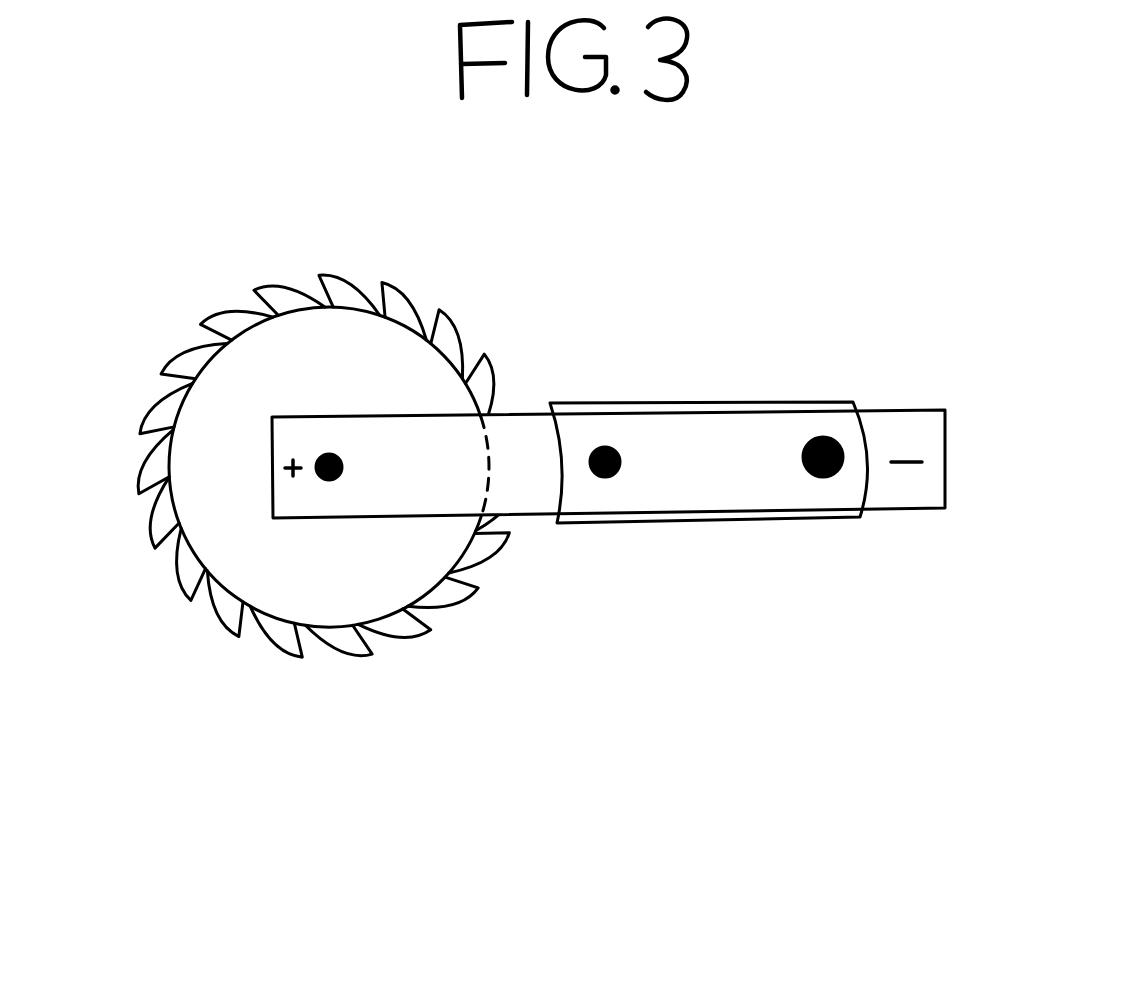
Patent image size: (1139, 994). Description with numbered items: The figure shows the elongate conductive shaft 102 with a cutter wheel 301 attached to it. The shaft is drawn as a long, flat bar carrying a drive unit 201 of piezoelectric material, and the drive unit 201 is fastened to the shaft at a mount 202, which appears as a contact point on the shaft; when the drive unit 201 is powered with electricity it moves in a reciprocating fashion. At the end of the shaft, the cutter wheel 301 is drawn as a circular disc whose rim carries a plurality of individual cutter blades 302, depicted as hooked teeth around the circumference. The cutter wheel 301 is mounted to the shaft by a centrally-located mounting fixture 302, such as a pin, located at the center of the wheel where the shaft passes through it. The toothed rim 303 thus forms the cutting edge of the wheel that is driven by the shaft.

The elongate conductive shaft 102 is at (1060, 173).
The drive unit 201 is at (787, 275).
The mount 202 is at (977, 663).
The cutter wheel 301 is at (643, 793).
The cutter blades 302 is at (750, 652).
The gear teeth 303 is at (170, 867).